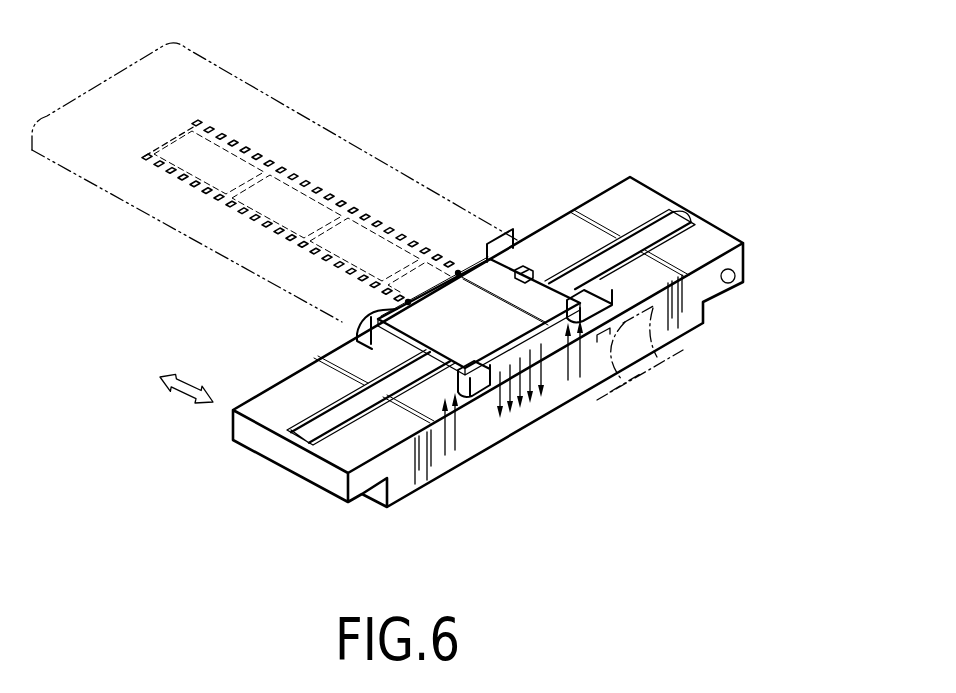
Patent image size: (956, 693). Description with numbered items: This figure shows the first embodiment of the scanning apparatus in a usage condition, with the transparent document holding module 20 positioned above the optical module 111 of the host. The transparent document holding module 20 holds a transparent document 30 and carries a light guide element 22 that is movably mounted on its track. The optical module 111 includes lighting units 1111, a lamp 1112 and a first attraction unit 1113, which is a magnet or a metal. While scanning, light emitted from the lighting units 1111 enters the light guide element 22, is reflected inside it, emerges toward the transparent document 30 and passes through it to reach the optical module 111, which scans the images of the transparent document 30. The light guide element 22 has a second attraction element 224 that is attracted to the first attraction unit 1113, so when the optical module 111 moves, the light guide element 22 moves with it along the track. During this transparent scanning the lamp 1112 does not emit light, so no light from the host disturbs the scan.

The transparent document holding module 20 is at (152, 228).
The transparent document 30 is at (281, 168).
The light guide element 22 is at (340, 325).
The optical module 111 is at (712, 237).
The lighting units 1111 is at (527, 270).
The lamp 1112 is at (672, 213).
The first attraction unit 1113 is at (618, 376).
The second attraction element 224 is at (657, 357).